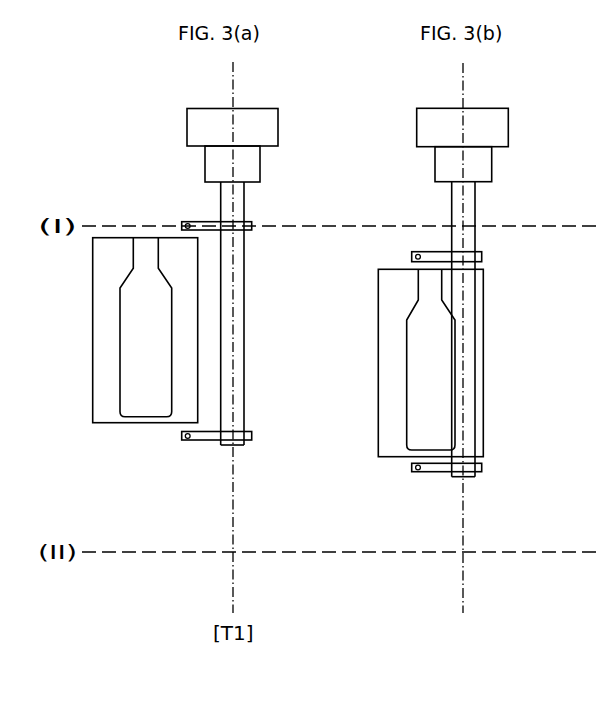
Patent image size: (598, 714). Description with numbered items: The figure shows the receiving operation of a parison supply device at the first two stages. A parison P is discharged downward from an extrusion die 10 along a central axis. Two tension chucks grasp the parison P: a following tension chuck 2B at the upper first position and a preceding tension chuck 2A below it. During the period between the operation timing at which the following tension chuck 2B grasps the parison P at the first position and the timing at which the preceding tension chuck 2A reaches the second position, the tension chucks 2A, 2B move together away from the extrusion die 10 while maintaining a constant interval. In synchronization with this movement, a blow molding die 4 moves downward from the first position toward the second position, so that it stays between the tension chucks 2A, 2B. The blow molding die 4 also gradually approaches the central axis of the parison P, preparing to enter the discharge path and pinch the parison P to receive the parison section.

In FIG. 3A, the extrusion die 10 is at (278, 126).
In FIG. 3B, the extrusion die 10 is at (508, 126).
In FIG. 3A, the parison P is at (244, 200).
In FIG. 3B, the parison P is at (475, 200).
In FIG. 3A, the following tension chuck 2B is at (252, 229).
In FIG. 3B, the following tension chuck 2B is at (482, 258).
In FIG. 3A, the preceding tension chuck 2A is at (252, 437).
In FIG. 3B, the preceding tension chuck 2A is at (482, 467).
In FIG. 3A, the blow molding die 4 is at (93, 352).
In FIG. 3B, the blow molding die 4 is at (378, 387).